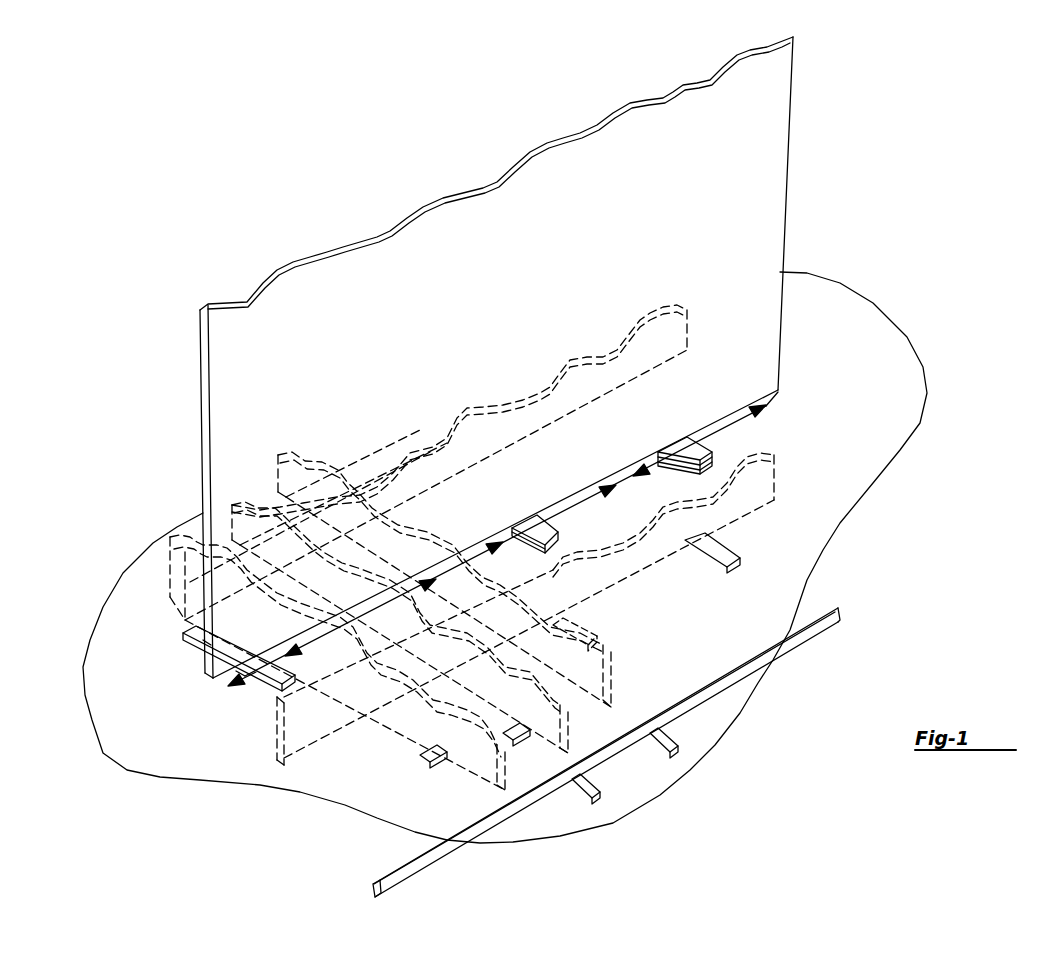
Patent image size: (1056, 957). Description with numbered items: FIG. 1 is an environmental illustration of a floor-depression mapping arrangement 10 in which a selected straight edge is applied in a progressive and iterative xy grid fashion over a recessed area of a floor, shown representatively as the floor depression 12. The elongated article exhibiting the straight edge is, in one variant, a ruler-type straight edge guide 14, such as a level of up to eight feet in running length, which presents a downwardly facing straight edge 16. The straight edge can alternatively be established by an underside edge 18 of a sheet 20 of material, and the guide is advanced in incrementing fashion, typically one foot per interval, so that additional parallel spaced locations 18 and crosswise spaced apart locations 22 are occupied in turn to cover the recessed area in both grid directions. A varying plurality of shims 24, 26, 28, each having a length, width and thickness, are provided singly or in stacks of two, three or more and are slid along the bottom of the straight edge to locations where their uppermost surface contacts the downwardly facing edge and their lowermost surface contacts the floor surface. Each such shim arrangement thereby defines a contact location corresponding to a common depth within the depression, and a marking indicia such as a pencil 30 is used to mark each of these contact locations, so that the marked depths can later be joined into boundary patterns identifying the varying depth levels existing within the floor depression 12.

The panel mounting system 10 is at (150, 382).
The floor depression 12 is at (838, 307).
The straight edge guide 14 is at (840, 622).
The downwardly facing straight edge 16 is at (783, 645).
The underside edge 18 is at (773, 403).
The sheet 20 is at (773, 163).
The crosswise spaced apart locations 22 is at (550, 733).
The shim 24 is at (263, 678).
The shim 26 is at (558, 545).
The shim 28 is at (713, 460).
The pencil 30 is at (200, 643).